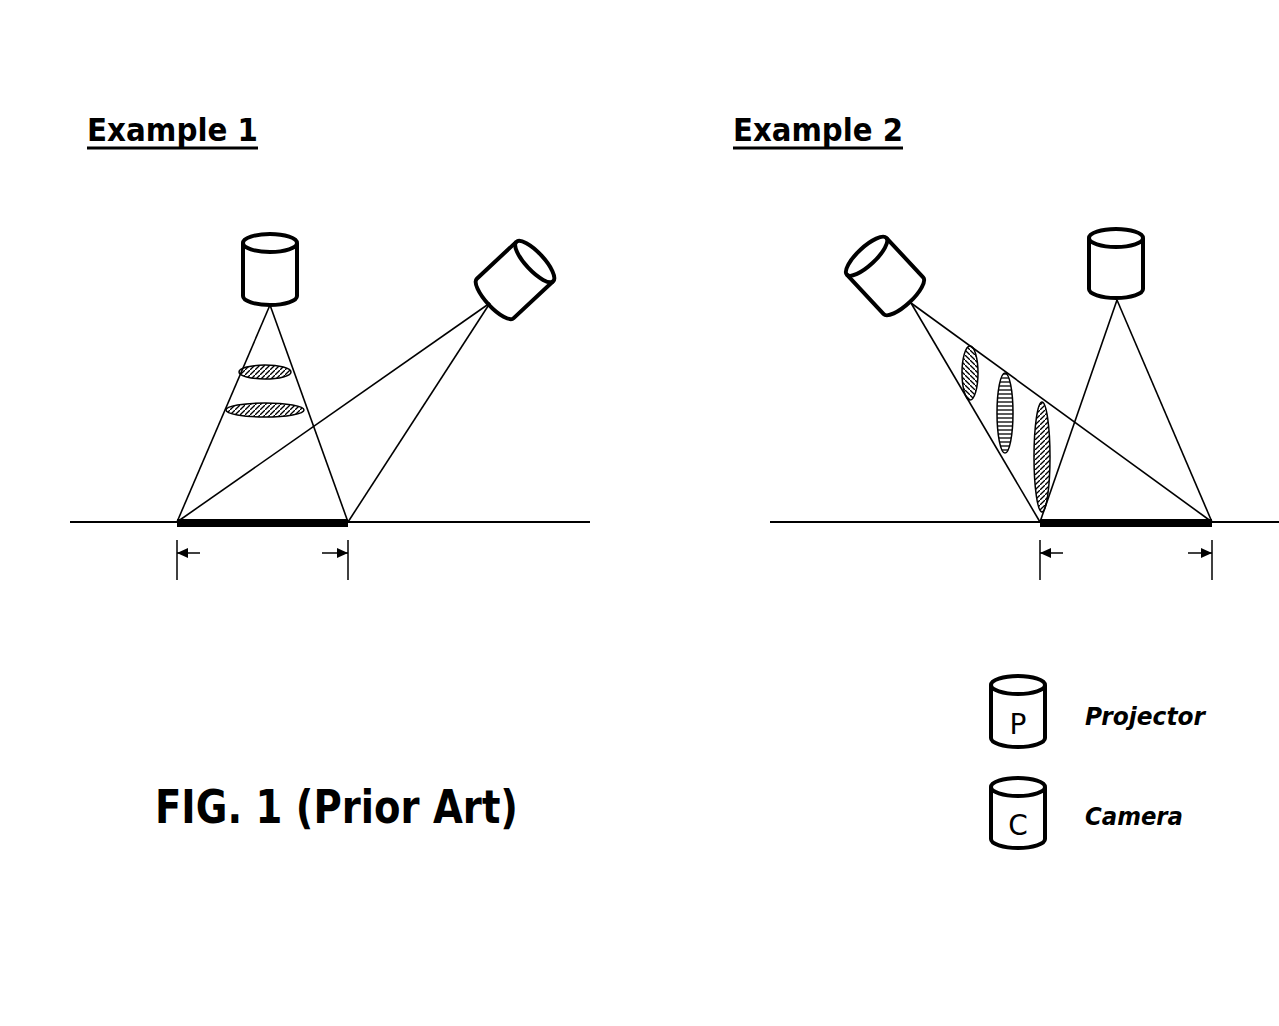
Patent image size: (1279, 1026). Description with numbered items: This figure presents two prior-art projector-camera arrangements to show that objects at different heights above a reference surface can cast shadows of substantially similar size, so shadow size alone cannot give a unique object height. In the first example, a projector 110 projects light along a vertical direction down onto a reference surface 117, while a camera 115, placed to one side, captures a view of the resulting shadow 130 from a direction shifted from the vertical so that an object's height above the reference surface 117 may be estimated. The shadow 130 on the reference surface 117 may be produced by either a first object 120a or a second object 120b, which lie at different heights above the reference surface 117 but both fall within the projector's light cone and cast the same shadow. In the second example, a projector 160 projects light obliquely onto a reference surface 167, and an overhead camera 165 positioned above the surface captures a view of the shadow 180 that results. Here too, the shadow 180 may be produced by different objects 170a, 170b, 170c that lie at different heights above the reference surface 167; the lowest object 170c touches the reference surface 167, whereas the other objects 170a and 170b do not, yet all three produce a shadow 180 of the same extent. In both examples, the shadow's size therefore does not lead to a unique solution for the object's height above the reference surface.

The projector 110 is at (257, 272).
The camera 115 is at (543, 263).
The reference surface 117 is at (515, 520).
The first object 120a is at (243, 372).
The second object 120b is at (232, 411).
The shadow 130 is at (323, 527).
The projector 160 is at (893, 260).
The overhead camera 165 is at (1130, 262).
The reference surface 167 is at (798, 520).
The object 170a is at (961, 386).
The object 170b is at (1001, 428).
The object 170c is at (1038, 470).
The shadow 180 is at (1173, 518).